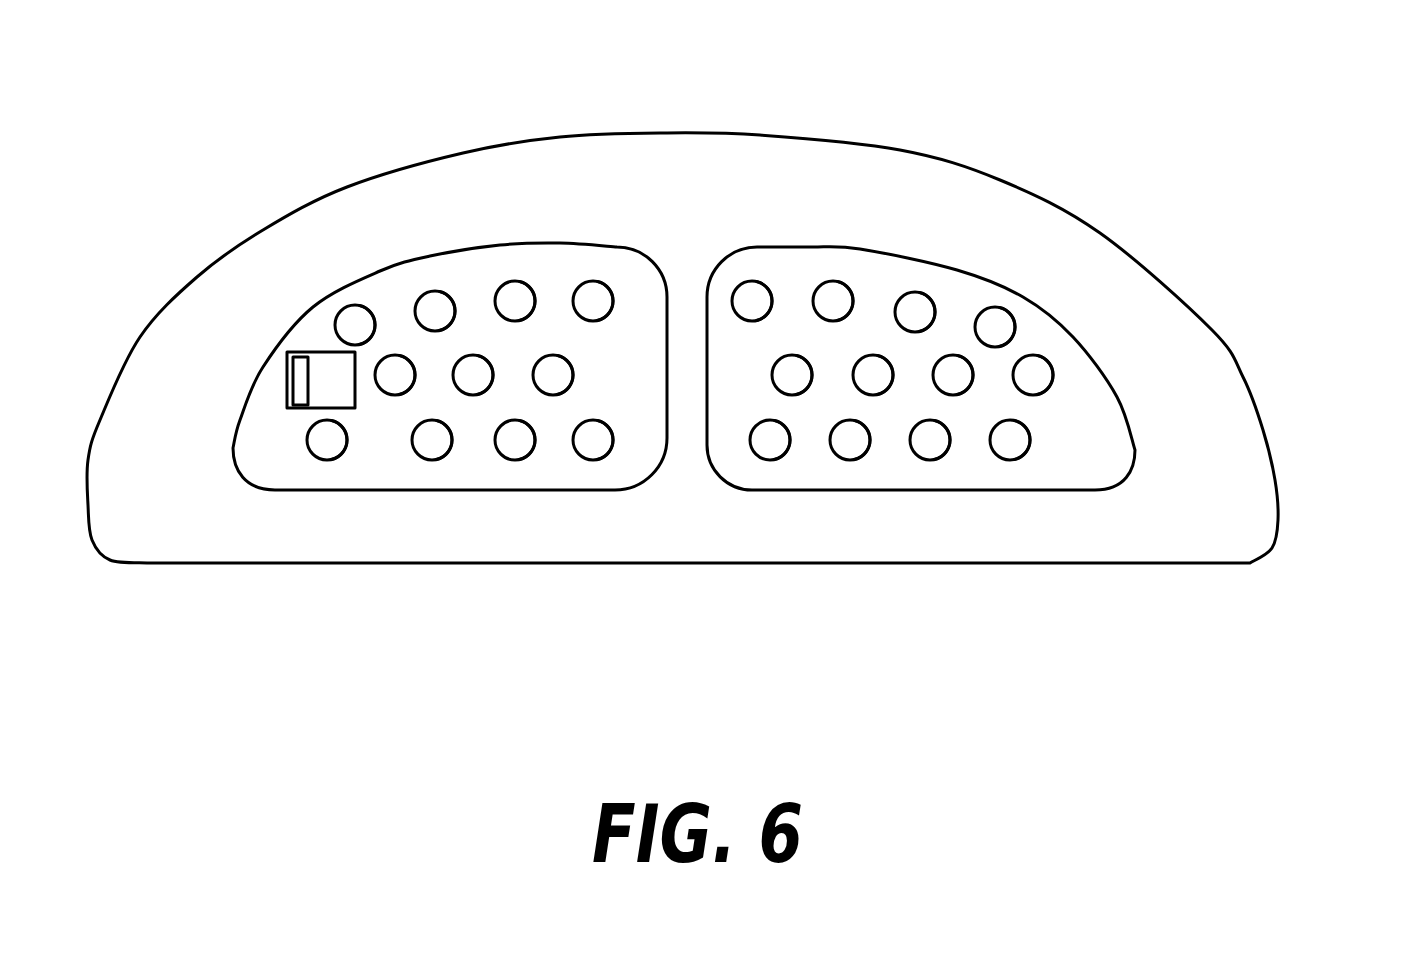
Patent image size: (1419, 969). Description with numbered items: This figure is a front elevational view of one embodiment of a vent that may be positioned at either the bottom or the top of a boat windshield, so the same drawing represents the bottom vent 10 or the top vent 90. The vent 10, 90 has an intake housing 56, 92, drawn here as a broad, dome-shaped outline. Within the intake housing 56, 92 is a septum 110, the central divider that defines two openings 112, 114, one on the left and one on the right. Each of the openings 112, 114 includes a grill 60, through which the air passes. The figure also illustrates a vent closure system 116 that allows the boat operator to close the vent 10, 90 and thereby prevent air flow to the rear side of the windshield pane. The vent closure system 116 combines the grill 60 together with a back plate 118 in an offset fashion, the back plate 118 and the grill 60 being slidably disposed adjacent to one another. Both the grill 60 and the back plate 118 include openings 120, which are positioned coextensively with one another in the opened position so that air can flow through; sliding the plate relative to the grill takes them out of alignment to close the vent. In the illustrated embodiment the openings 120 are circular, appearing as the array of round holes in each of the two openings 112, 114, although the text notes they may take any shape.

The bottom vent 10 is at (752, 297).
The top vent 90 is at (752, 297).
The intake housing 56 is at (752, 297).
The intake housing 92 is at (1152, 162).
The grill 60 is at (662, 370).
The septum 110 is at (775, 270).
The opening 112 is at (565, 472).
The opening 114 is at (775, 450).
The vent closure system 116 is at (262, 450).
The back plate 118 is at (350, 453).
The openings 120 is at (430, 448).